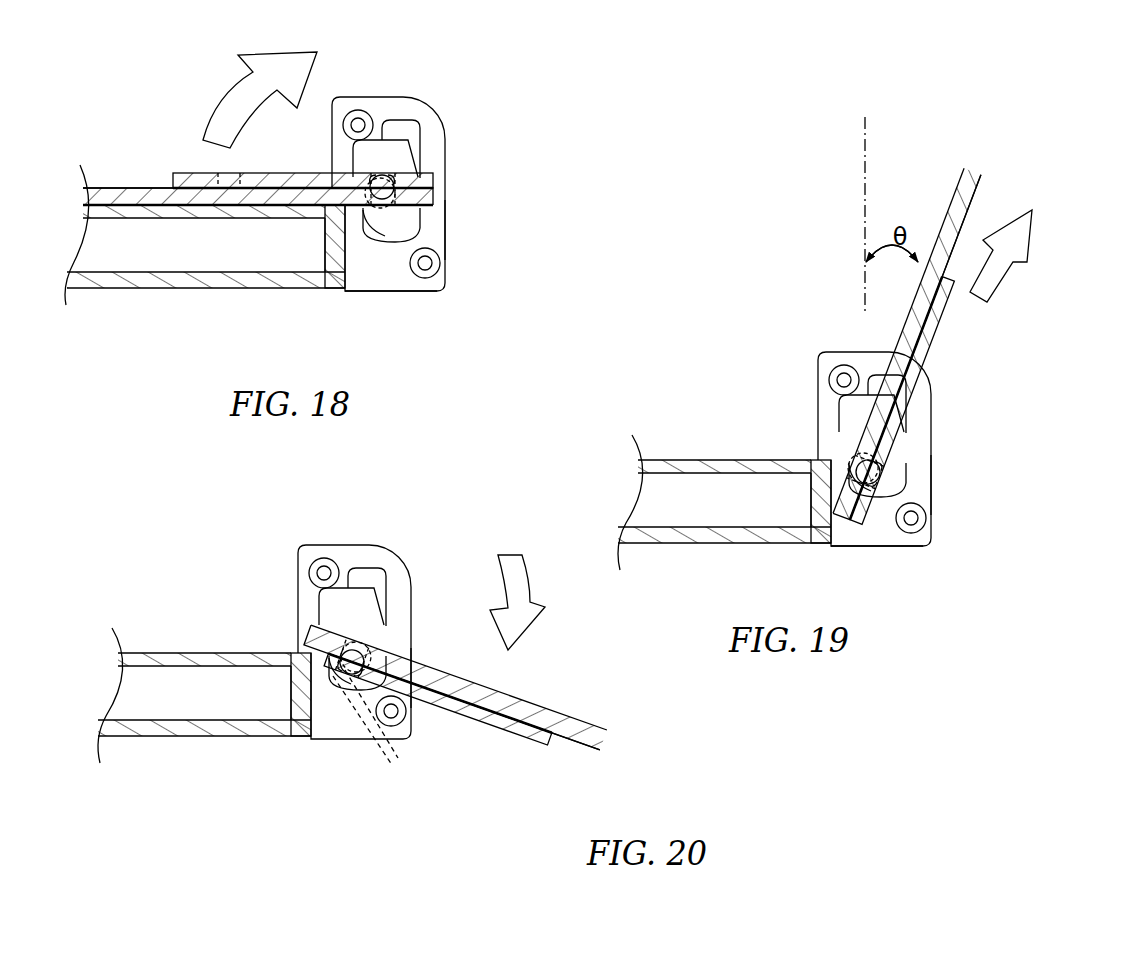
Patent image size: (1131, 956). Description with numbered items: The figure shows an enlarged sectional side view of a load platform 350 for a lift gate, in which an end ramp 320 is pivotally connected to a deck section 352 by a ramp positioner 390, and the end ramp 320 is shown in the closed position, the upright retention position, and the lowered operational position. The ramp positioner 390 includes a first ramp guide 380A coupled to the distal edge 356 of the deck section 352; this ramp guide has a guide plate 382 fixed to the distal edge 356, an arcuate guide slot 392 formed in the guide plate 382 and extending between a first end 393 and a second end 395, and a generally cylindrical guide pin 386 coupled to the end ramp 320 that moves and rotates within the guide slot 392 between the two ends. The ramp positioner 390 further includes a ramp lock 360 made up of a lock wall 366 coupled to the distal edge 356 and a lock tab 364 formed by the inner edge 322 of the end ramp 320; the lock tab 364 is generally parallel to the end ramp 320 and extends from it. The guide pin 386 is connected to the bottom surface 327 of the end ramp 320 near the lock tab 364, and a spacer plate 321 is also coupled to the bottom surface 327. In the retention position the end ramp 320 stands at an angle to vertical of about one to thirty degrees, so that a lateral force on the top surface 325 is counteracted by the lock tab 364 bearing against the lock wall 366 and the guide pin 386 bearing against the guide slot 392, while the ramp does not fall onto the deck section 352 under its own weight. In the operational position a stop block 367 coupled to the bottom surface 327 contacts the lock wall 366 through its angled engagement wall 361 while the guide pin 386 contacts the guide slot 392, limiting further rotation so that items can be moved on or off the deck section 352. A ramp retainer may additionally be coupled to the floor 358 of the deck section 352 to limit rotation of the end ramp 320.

In FIG. 18, the end ramp 320 is at (170, 90).
In FIG. 19, the end ramp 320 is at (1052, 200).
In FIG. 20, the end ramp 320 is at (622, 712).
In FIG. 18, the spacer plate 321 is at (295, 182).
In FIG. 19, the spacer plate 321 is at (922, 348).
In FIG. 20, the spacer plate 321 is at (425, 700).
In FIG. 18, the inner edge 322 is at (425, 194).
In FIG. 19, the inner edge 322 is at (842, 547).
In FIG. 20, the inner edge 322 is at (305, 642).
In FIG. 18, the top surface 325 is at (123, 218).
In FIG. 19, the top surface 325 is at (905, 299).
In FIG. 20, the top surface 325 is at (578, 723).
In FIG. 18, the bottom surface 327 is at (146, 185).
In FIG. 19, the bottom surface 327 is at (955, 264).
In FIG. 20, the bottom surface 327 is at (573, 755).
In FIG. 18, the load platform 350 is at (530, 128).
In FIG. 19, the load platform 350 is at (719, 319).
In FIG. 20, the load platform 350 is at (188, 525).
In FIG. 18, the deck section 352 is at (100, 295).
In FIG. 19, the deck section 352 is at (650, 555).
In FIG. 20, the deck section 352 is at (130, 740).
In FIG. 18, the distal edge 356 is at (323, 255).
In FIG. 19, the distal edge 356 is at (805, 512).
In FIG. 20, the distal edge 356 is at (298, 712).
In FIG. 18, the floor 358 is at (86, 185).
In FIG. 19, the floor 358 is at (662, 453).
In FIG. 20, the floor 358 is at (138, 648).
In FIG. 18, the ramp lock 360 is at (382, 312).
In FIG. 19, the ramp lock 360 is at (884, 564).
In FIG. 20, the ramp lock 360 is at (321, 763).
In FIG. 18, the engagement wall 361 is at (418, 152).
In FIG. 19, the engagement wall 361 is at (890, 543).
In FIG. 20, the engagement wall 361 is at (350, 702).
In FIG. 18, the lock tab 364 is at (420, 185).
In FIG. 19, the lock tab 364 is at (876, 540).
In FIG. 20, the lock tab 364 is at (340, 640).
In FIG. 18, the lock wall 366 is at (338, 262).
In FIG. 19, the lock wall 366 is at (818, 520).
In FIG. 20, the lock wall 366 is at (318, 720).
In FIG. 18, the stop block 367 is at (383, 145).
In FIG. 19, the stop block 367 is at (912, 472).
In FIG. 20, the stop block 367 is at (352, 708).
In FIG. 18, the first ramp guide 380A is at (455, 229).
In FIG. 19, the first ramp guide 380A is at (982, 463).
In FIG. 20, the first ramp guide 380A is at (427, 590).
In FIG. 18, the guide plate 382 is at (435, 137).
In FIG. 19, the guide plate 382 is at (835, 352).
In FIG. 20, the guide plate 382 is at (335, 552).
In FIG. 18, the guide pin 386 is at (397, 165).
In FIG. 19, the guide pin 386 is at (905, 475).
In FIG. 20, the guide pin 386 is at (330, 636).
In FIG. 18, the ramp positioner 390 is at (473, 343).
In FIG. 19, the ramp positioner 390 is at (962, 588).
In FIG. 18, the guide slot 392 is at (417, 224).
In FIG. 19, the guide slot 392 is at (907, 443).
In FIG. 20, the guide slot 392 is at (402, 648).
In FIG. 18, the first end 393 is at (377, 240).
In FIG. 19, the first end 393 is at (807, 460).
In FIG. 20, the first end 393 is at (393, 765).
In FIG. 18, the second end 395 is at (402, 140).
In FIG. 19, the second end 395 is at (868, 374).
In FIG. 20, the second end 395 is at (378, 575).